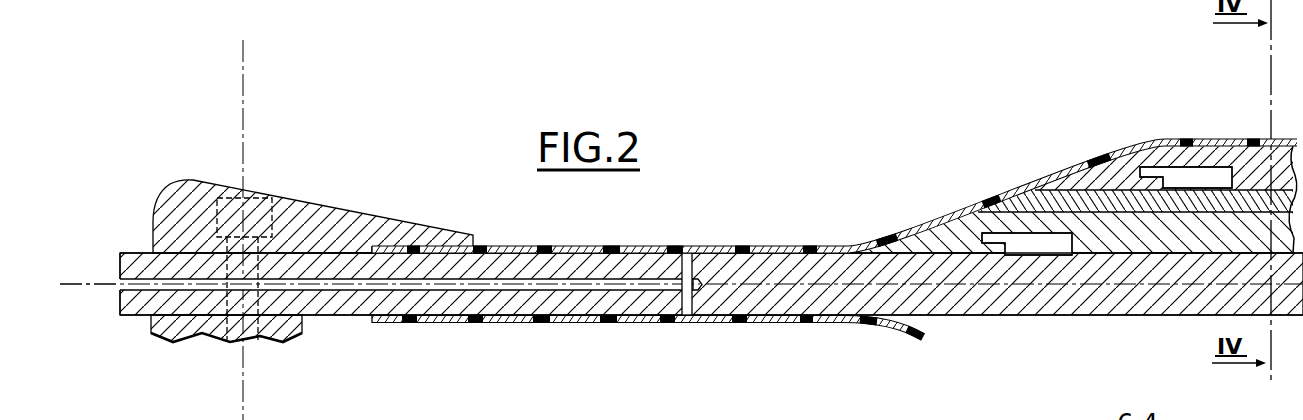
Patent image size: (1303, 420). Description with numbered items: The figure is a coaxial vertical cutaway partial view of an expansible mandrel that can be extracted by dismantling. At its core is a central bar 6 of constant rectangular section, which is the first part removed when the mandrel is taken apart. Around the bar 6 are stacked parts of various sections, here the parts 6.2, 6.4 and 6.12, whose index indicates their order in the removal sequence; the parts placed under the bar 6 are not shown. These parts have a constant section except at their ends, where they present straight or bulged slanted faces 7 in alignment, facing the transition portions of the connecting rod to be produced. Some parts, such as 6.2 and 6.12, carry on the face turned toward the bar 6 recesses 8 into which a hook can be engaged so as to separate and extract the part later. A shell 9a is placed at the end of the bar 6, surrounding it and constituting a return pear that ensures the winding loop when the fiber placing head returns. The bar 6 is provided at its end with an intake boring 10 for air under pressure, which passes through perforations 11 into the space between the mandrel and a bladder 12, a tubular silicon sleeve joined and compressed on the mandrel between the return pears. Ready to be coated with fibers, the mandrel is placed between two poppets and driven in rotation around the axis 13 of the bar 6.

The central bar 6 is at (148, 267).
The shell 9a is at (300, 225).
The intake boring 10 is at (485, 283).
The perforations 11 is at (687, 263).
The bladder 12 is at (788, 238).
The axis 13 is at (837, 283).
The recesses 8 is at (1025, 245).
The mandrel part 6.2 is at (1032, 225).
The mandrel part 6.4 is at (1100, 202).
The mandrel part 6.12 is at (1173, 157).
The slanted faces 7 is at (918, 242).